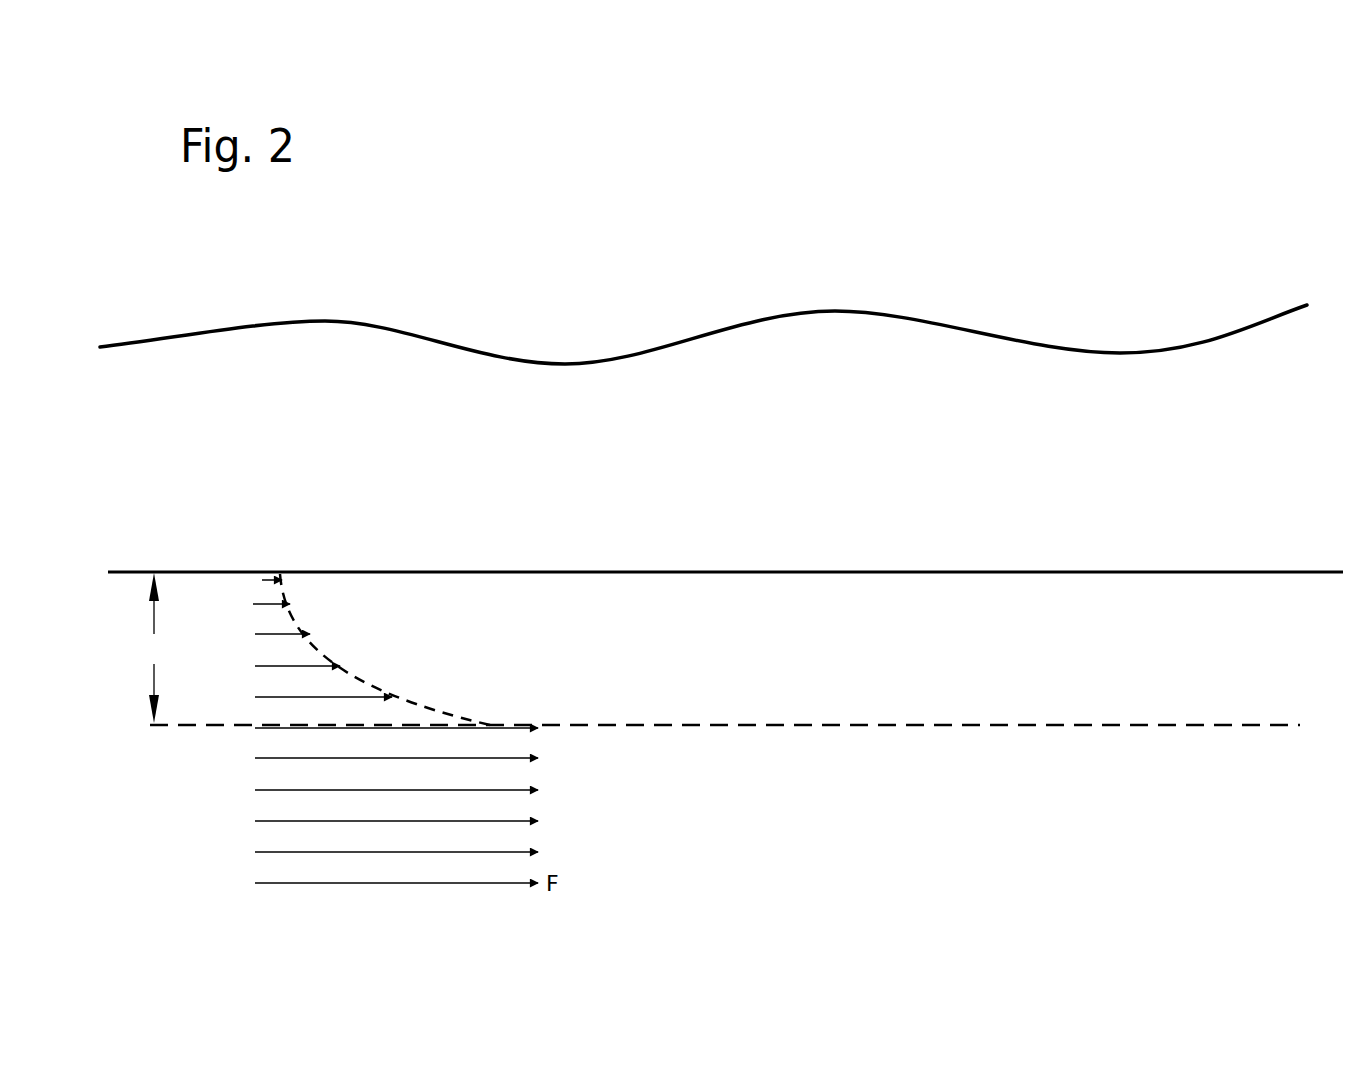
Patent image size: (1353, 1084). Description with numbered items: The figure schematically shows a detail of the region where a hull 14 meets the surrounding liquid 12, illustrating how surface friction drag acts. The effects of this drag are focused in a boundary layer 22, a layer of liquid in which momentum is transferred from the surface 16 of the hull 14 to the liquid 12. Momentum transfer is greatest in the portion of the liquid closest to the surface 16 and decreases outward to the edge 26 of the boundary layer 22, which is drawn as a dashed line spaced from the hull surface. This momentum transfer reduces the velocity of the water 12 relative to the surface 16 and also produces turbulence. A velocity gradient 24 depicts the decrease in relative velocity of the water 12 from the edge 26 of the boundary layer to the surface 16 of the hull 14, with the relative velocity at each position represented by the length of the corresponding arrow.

The liquid 12 is at (855, 372).
The hull 14 is at (552, 522).
The surface 16 is at (842, 572).
The boundary layer 22 is at (156, 648).
The velocity gradient 24 is at (352, 668).
The edge 26 is at (223, 725).